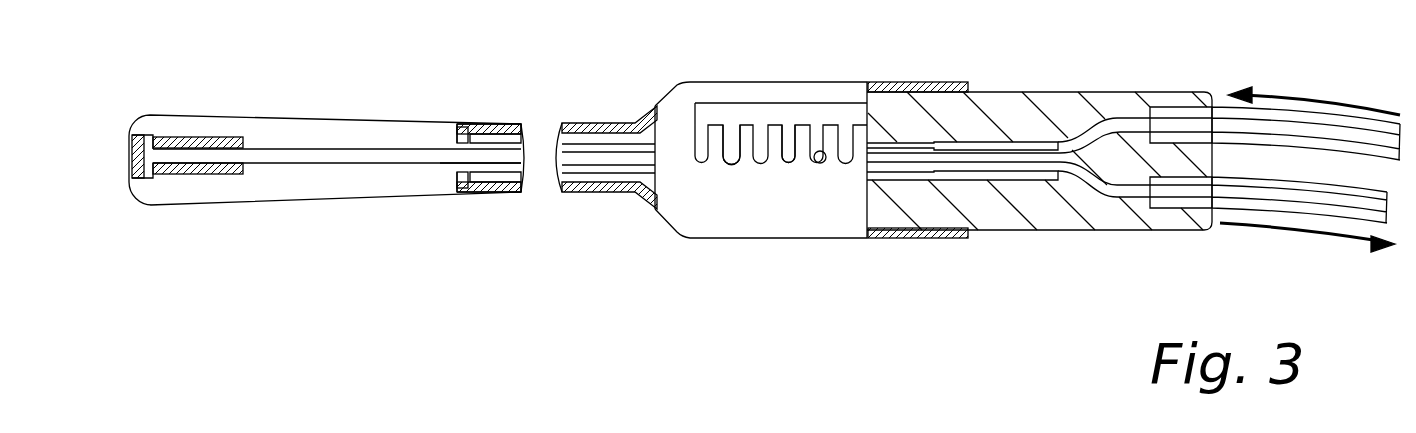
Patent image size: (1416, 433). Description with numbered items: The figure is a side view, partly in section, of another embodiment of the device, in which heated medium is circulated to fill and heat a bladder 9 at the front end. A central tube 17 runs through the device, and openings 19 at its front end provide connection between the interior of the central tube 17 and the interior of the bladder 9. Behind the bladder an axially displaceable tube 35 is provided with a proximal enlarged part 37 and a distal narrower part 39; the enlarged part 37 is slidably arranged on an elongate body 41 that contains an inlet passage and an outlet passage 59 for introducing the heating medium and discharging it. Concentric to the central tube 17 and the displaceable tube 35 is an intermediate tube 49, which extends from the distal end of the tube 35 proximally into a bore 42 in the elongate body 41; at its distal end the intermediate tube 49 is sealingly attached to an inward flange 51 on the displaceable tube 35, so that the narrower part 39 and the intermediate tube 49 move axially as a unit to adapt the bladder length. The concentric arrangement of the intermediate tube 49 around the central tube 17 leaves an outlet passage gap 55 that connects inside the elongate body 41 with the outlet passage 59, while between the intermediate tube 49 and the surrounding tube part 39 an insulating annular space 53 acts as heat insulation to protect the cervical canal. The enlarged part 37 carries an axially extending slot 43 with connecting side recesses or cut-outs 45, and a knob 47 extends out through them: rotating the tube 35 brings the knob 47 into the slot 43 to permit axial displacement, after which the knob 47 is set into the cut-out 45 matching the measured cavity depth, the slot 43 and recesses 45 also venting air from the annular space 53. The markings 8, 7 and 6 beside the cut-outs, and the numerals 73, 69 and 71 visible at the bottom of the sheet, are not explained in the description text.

The bladder 9 is at (277, 118).
The central tube 17 is at (325, 150).
The openings 19 is at (146, 175).
The outlet passage gap 55 is at (450, 168).
The insulating annular space 53 is at (493, 177).
The inward flange 51 is at (455, 193).
The intermediate tube 49 is at (580, 172).
The distal narrower part 39 is at (588, 120).
The axially displaceable tube 35 is at (690, 90).
The axially extending slot 43 is at (780, 115).
The side recesses or cut-outs 45 is at (793, 160).
The knob 47 is at (826, 162).
The proximal enlarged part 37 is at (913, 81).
The elongate body 41 is at (1013, 102).
The bore 42 is at (1020, 172).
The outlet passage 59 is at (1130, 193).
The position mark 8 is at (705, 190).
The position mark 7 is at (762, 191).
The position mark 6 is at (827, 190).
The element 73 is at (872, 432).
The element 69 is at (720, 426).
The element 71 is at (917, 426).